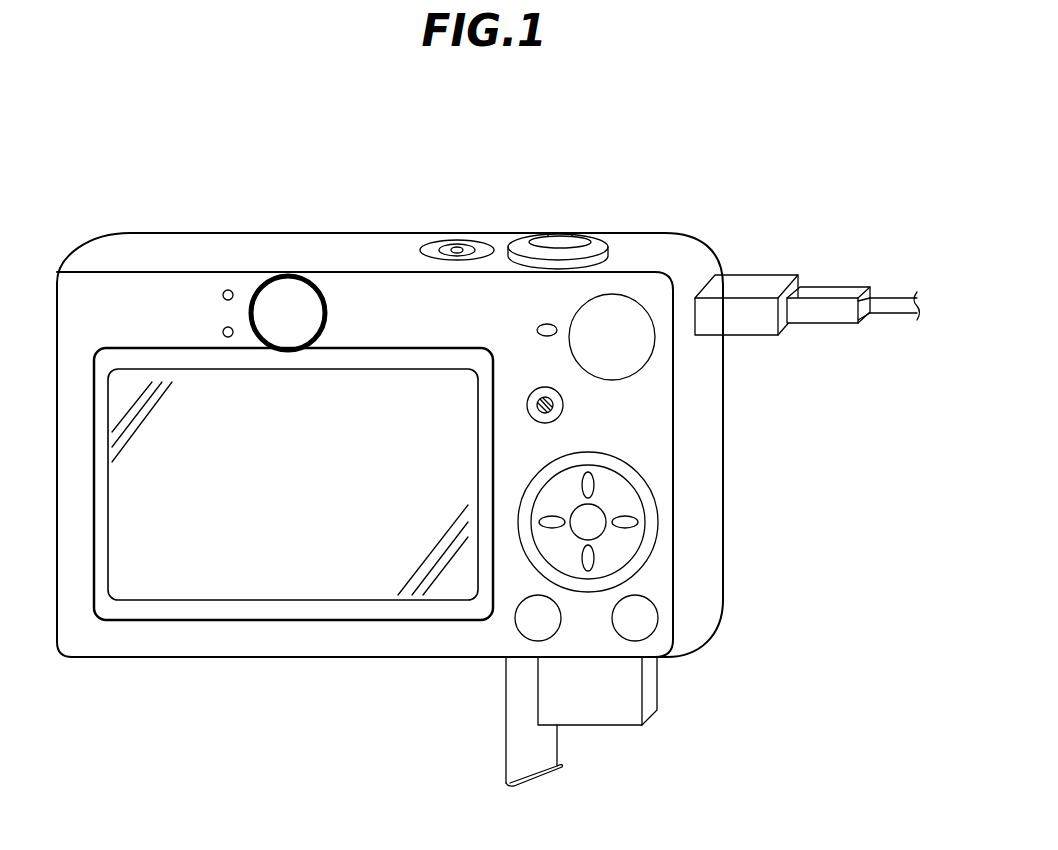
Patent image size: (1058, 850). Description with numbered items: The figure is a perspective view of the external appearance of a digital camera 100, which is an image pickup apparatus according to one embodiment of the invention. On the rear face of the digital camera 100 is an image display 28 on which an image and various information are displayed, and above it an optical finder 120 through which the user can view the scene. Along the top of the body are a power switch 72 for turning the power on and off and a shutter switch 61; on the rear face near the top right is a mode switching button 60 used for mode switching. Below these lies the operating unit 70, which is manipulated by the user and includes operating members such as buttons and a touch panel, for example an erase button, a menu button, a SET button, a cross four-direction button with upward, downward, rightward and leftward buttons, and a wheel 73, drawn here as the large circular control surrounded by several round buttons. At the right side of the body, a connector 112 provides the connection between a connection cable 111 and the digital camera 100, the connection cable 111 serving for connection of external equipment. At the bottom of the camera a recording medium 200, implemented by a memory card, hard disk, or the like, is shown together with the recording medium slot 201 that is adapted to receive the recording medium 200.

The digital camera 100 is at (500, 192).
The image display 28 is at (180, 378).
The optical finder 120 is at (318, 292).
The power switch 72 is at (458, 243).
The shutter switch 61 is at (560, 232).
The mode switching button 60 is at (647, 353).
The wheel 73 is at (523, 486).
The operating unit 70 is at (607, 256).
The connector 112 is at (760, 275).
The connection cable 111 is at (823, 288).
The recording medium 200 is at (627, 727).
The recording medium slot 201 is at (556, 660).